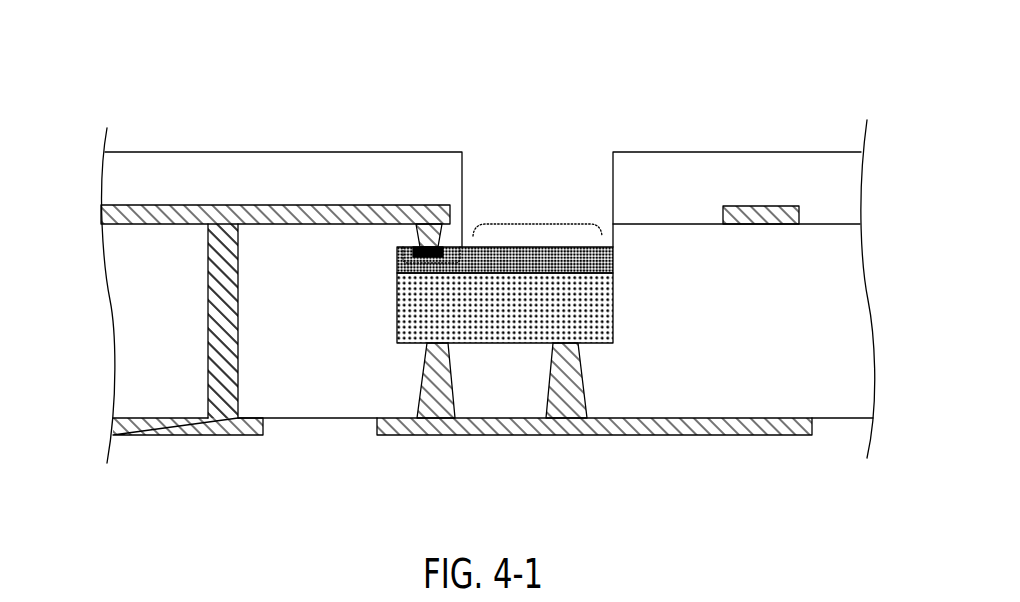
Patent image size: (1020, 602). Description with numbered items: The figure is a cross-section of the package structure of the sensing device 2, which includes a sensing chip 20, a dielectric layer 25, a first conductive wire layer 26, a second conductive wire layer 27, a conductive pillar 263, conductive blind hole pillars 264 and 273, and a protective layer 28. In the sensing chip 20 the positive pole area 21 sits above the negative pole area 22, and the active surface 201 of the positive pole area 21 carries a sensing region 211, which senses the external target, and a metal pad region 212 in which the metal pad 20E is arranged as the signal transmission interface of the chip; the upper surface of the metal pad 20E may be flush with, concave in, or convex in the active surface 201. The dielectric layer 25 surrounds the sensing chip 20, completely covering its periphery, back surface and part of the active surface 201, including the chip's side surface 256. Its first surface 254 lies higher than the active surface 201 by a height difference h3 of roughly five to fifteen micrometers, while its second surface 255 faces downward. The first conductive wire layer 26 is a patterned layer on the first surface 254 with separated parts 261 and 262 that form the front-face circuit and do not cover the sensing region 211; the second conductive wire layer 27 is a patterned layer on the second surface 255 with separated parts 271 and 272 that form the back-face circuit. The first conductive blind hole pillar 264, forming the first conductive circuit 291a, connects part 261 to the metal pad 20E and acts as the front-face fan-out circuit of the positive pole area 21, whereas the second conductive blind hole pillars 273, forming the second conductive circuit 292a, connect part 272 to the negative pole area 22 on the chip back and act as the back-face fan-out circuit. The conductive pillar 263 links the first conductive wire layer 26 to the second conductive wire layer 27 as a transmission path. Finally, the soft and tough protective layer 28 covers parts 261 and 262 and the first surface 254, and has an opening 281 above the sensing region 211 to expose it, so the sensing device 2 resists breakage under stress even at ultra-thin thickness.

The sensing device 2 is at (461, 265).
The sensing chip 20 is at (530, 209).
The metal pad 20E is at (440, 247).
The positive pole area 21 is at (533, 196).
The negative pole area 22 is at (614, 308).
The dielectric layer 25 is at (453, 321).
The first conductive wire layer 26 is at (454, 289).
The second conductive wire layer 27 is at (466, 371).
The protective layer 28 is at (454, 171).
The active surface 201 is at (542, 247).
The sensing region 211 is at (538, 222).
The metal pad region 212 is at (434, 265).
The first surface 254 is at (269, 225).
The second surface 255 is at (283, 417).
The side surface of die 256 is at (399, 350).
The first part of first conductive wire layer 261 is at (176, 205).
The second part of first conductive wire layer 262 is at (770, 205).
The conductive pillar 263 is at (208, 310).
The first conductive blind hole pillar 264 is at (354, 205).
The first conductive circuit 291a is at (431, 223).
The first part of second conductive wire layer 271 is at (193, 437).
The second part of second conductive wire layer 272 is at (728, 437).
The second conductive blind hole pillar 273 is at (571, 431).
The second conductive circuit 292a is at (452, 368).
The opening 281 is at (567, 152).
The height difference h3 is at (397, 247).